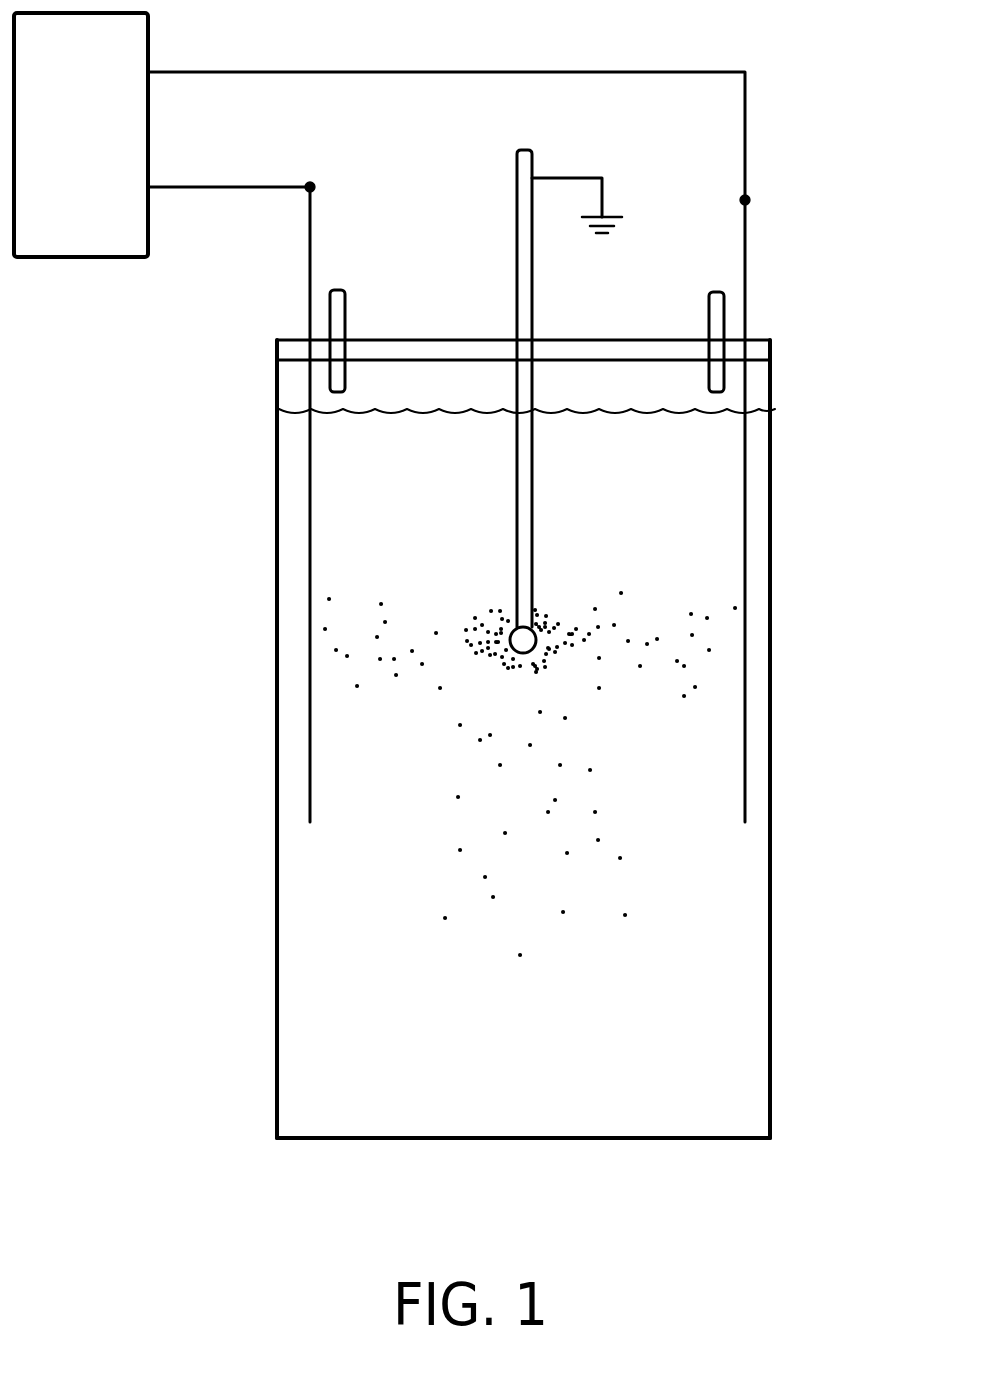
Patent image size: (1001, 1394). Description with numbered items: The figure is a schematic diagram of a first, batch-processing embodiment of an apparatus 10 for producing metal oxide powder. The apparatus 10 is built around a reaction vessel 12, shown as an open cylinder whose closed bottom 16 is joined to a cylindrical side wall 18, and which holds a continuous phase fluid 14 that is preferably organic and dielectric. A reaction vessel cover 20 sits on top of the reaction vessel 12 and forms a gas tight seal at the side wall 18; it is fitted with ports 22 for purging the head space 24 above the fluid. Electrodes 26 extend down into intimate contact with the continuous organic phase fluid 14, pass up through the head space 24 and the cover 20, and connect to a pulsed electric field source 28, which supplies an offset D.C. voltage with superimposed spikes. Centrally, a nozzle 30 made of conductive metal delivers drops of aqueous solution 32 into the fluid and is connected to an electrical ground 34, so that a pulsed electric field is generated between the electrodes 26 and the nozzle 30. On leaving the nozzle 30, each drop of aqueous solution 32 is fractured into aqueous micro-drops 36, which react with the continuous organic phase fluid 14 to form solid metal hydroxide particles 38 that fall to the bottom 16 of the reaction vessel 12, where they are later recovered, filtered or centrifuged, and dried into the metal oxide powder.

The apparatus 10 is at (182, 826).
The reaction vessel 12 is at (538, 779).
The continuous phase fluid 14 is at (288, 1053).
The closed bottom 16 is at (545, 1140).
The cylindrical side wall 18 is at (772, 870).
The reaction vessel cover 20 is at (576, 338).
The ports 22 is at (346, 311).
The head space 24 is at (757, 388).
The electrodes 26 is at (308, 580).
The pulsed electric field source 28 is at (106, 125).
The nozzle 30 is at (517, 223).
The drops of aqueous solution 32 is at (534, 628).
The electrical ground 34 is at (616, 217).
The aqueous micro-drops 36 is at (473, 683).
The metal hydroxide particles 38 is at (493, 897).